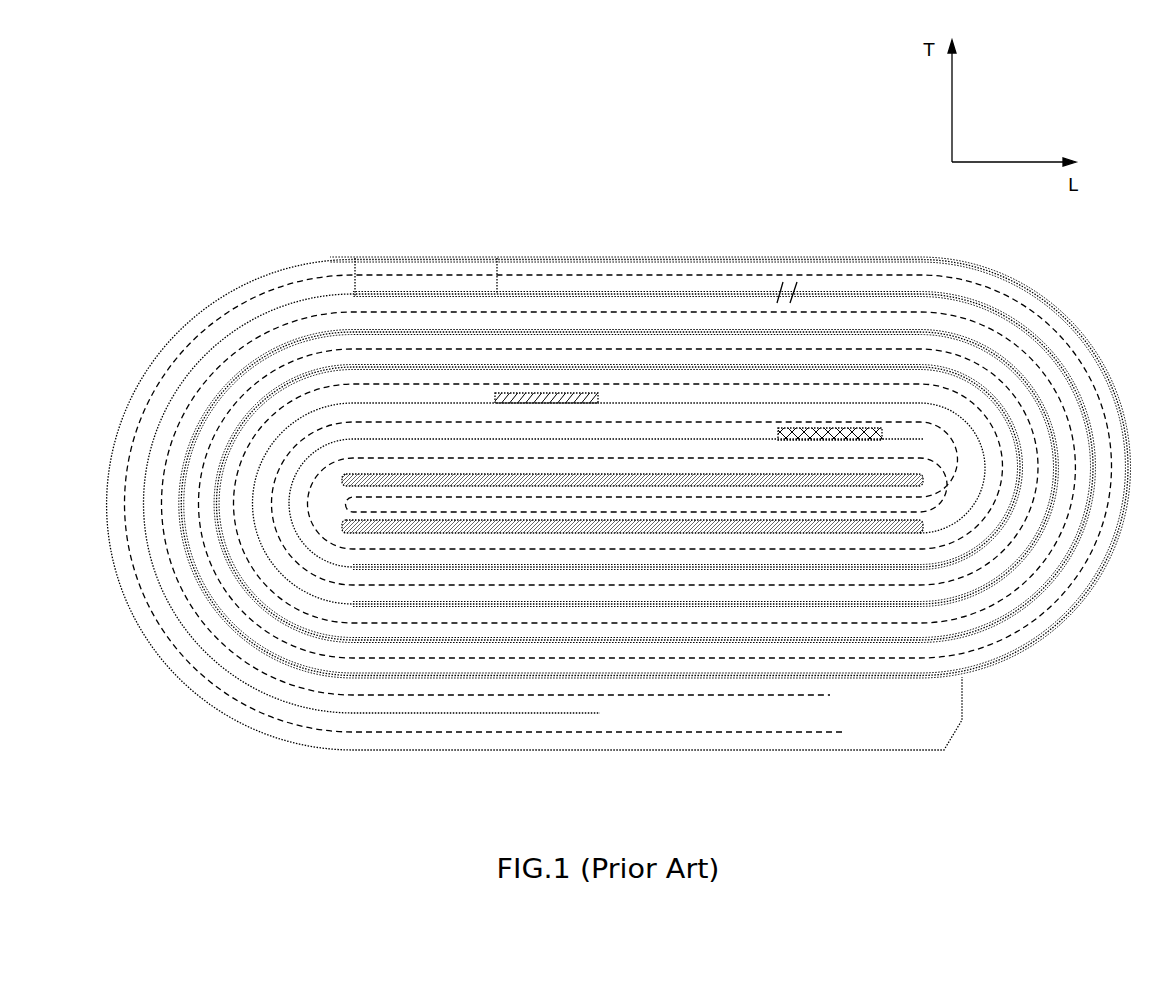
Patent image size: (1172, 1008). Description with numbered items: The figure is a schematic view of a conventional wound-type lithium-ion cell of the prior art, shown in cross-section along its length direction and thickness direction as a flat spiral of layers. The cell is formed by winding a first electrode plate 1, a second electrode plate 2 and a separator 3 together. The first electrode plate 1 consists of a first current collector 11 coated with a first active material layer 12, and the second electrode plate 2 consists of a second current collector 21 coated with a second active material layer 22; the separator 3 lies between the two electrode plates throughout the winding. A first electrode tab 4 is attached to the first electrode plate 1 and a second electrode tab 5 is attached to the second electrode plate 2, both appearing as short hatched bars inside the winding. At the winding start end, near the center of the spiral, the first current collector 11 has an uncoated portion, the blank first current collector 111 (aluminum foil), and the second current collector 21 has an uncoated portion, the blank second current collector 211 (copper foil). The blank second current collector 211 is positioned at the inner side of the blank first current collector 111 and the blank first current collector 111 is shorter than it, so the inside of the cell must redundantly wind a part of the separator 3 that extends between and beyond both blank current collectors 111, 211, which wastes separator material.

The first electrode plate 1 is at (619, 459).
The first current collector 11 is at (638, 257).
The first active material layer 12 is at (777, 260).
The blank first current collector 111 is at (618, 405).
The second electrode plate 2 is at (620, 440).
The second current collector 21 is at (355, 262).
The second active material layer 22 is at (497, 262).
The blank second current collector 211 is at (700, 440).
The separator 3 is at (222, 318).
The first electrode tab 4 is at (510, 393).
The second electrode tab 5 is at (848, 430).